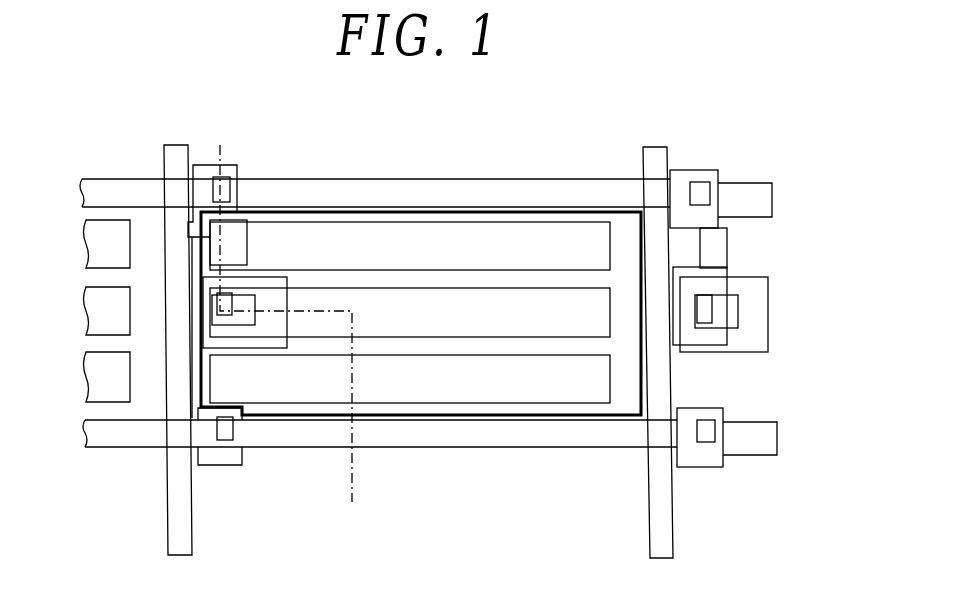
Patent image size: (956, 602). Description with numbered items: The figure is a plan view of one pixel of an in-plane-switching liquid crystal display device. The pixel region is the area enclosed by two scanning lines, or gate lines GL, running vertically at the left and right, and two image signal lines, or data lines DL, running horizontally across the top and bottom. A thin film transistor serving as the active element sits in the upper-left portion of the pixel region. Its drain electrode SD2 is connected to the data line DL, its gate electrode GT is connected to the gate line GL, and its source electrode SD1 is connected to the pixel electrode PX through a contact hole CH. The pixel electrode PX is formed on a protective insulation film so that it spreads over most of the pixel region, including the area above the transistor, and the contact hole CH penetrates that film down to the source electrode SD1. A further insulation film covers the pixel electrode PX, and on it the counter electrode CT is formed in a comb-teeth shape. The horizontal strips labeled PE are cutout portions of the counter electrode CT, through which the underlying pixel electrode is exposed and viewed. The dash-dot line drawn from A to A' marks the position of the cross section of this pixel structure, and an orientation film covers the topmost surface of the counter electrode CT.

The gate line GL is at (174, 148).
The data line DL is at (588, 193).
The pixel electrode PX is at (375, 205).
The cutout portions of the counter electrode PE is at (435, 253).
The counter electrode CT is at (475, 278).
The gate electrode GT is at (248, 277).
The source electrode SD1 is at (285, 276).
The drain electrode SD2 is at (235, 248).
The contact hole CH is at (238, 320).
The section line A-A' end point A is at (282, 310).
The section line A-A' end point A' is at (354, 518).